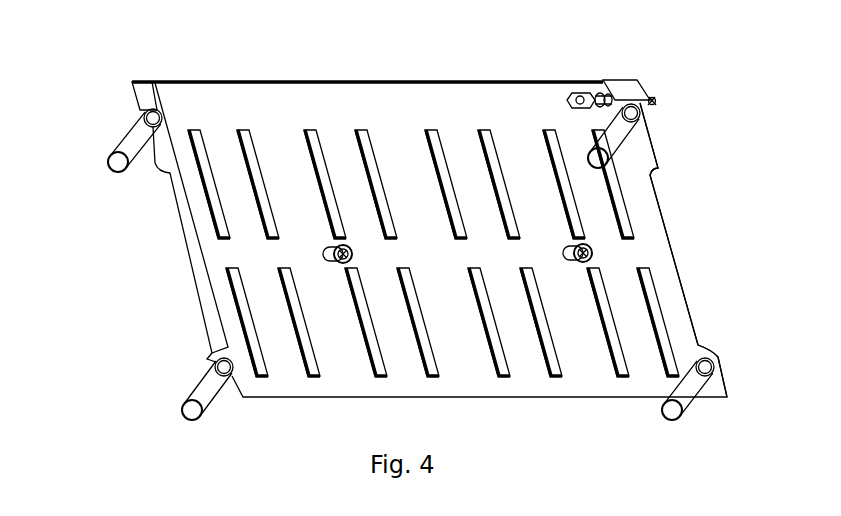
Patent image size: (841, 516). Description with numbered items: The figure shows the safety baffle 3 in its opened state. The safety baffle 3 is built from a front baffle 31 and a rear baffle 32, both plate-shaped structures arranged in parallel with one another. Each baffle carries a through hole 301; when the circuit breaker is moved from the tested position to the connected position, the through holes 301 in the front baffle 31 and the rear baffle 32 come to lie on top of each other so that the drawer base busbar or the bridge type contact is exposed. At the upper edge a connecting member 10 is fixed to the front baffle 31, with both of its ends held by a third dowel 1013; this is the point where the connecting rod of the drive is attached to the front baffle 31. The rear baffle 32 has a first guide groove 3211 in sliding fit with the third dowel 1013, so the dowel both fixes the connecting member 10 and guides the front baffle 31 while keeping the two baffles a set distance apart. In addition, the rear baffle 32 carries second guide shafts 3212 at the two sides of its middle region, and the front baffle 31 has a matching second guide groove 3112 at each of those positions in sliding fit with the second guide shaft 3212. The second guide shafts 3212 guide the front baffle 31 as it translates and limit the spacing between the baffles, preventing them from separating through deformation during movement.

The safety baffle 3 is at (218, 265).
The through hole 301 is at (410, 297).
The connecting member 10 is at (537, 111).
The third dowel 1013 is at (645, 95).
The front baffle 31 is at (620, 100).
The rear baffle 32 is at (640, 160).
The first guide groove 3211 is at (655, 102).
The second guide groove 3112 is at (593, 251).
The second guide shaft 3212 is at (590, 256).